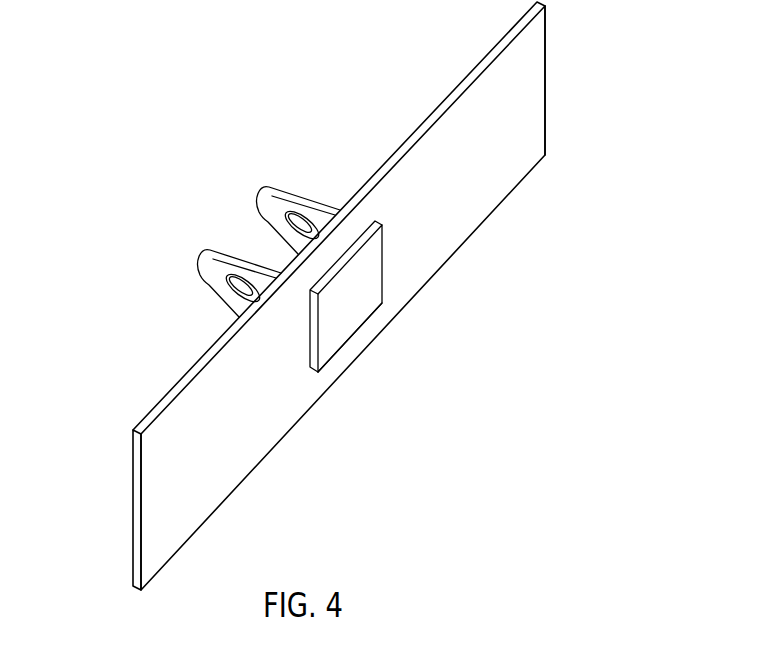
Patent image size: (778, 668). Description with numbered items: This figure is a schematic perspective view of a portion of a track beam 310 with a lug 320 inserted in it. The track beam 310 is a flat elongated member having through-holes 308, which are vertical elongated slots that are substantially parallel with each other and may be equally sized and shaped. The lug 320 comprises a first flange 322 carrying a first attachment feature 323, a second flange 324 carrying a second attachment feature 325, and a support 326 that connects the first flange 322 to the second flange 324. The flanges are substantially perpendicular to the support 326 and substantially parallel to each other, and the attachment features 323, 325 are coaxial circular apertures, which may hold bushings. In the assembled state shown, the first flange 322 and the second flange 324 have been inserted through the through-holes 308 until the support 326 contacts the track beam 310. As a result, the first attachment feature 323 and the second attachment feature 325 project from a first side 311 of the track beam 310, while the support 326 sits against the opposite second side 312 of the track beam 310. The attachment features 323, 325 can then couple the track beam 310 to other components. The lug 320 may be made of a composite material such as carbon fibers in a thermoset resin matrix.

The through-holes 308 is at (311, 342).
The track beam 310 is at (188, 372).
The first side 311 is at (461, 81).
The second side 312 is at (488, 66).
The lug 320 is at (367, 335).
The first flange 322 is at (212, 256).
The first attachment feature 323 is at (207, 280).
The second flange 324 is at (270, 193).
The second attachment feature 325 is at (314, 198).
The support 326 is at (328, 361).